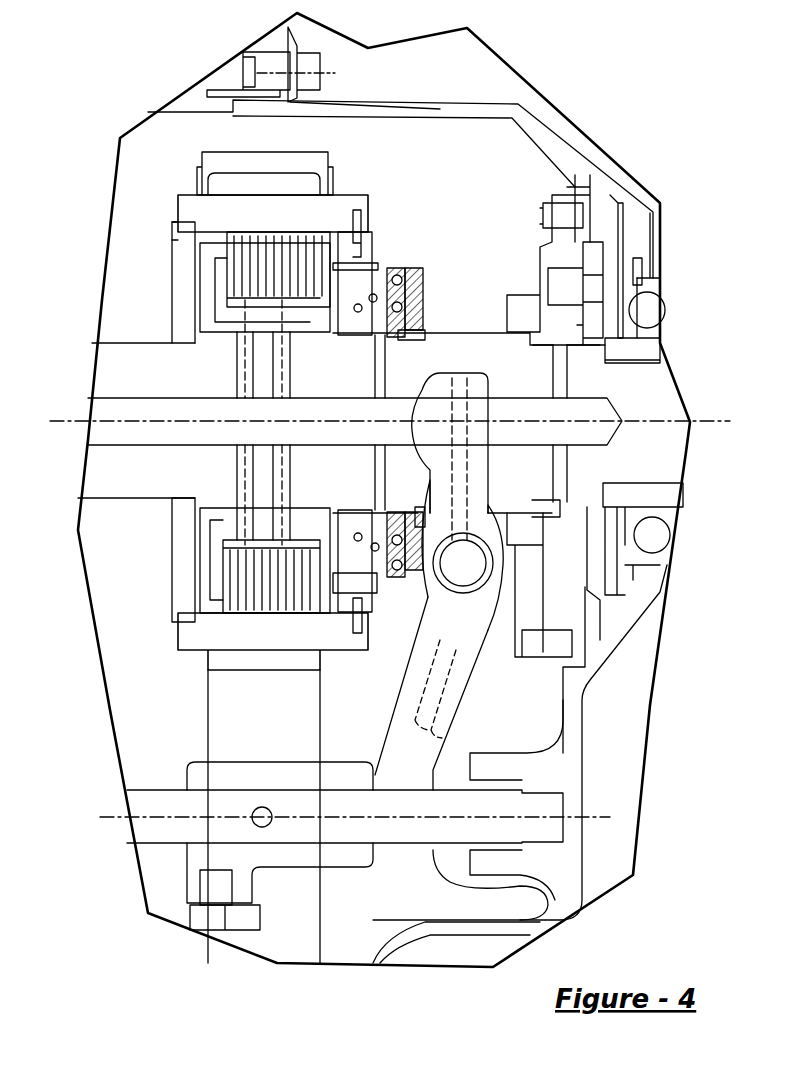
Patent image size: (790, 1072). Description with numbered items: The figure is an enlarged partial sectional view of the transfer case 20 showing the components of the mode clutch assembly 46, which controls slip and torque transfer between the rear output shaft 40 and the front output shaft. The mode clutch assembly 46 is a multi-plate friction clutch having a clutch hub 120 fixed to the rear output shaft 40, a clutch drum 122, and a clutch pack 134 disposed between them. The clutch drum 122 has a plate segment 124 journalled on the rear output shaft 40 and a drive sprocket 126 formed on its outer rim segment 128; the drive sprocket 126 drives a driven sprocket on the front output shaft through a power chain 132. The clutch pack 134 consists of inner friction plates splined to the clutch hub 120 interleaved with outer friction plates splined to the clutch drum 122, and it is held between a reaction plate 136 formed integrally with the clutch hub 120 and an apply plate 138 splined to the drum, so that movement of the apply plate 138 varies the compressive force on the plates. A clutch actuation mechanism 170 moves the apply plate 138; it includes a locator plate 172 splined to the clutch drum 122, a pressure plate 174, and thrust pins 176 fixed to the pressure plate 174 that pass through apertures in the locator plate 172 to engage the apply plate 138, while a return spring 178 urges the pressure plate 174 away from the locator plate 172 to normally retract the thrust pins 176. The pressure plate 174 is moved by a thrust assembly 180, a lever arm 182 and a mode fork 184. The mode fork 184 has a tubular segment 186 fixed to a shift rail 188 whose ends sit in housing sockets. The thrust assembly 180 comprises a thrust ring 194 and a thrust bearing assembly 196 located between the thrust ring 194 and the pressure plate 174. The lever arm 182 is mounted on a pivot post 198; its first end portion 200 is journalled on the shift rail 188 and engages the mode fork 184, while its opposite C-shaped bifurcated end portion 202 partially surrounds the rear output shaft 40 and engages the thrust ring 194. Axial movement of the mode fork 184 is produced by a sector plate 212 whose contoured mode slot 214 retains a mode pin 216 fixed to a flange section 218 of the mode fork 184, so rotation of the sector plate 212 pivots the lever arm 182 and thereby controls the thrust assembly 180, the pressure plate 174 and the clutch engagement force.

The transfer case 20 is at (560, 88).
The rear output shaft 40 is at (645, 393).
The mode clutch assembly 46 is at (412, 165).
The clutch hub 120 is at (225, 320).
The clutch drum 122 is at (337, 207).
The plate segment 124 is at (182, 263).
The drive sprocket 126 is at (235, 185).
The outer rim segment 128 is at (198, 640).
The power chain 132 is at (233, 743).
The clutch pack 134 is at (225, 572).
The reaction plate 136 is at (212, 275).
The apply plate 138 is at (323, 593).
The clutch actuation mechanism 170 is at (442, 256).
The locator plate 172 is at (345, 313).
The pressure plate 174 is at (383, 252).
The thrust pins 176 is at (365, 580).
The return spring 178 is at (373, 548).
The thrust assembly 180 is at (430, 300).
The lever arm 182 is at (455, 690).
The mode fork 184 is at (290, 870).
The tubular segment 186 is at (278, 778).
The shift rail 188 is at (148, 807).
The thrust ring 194 is at (402, 335).
The thrust bearing assembly 196 is at (423, 597).
The pivot post 198 is at (473, 562).
The first end portion 200 is at (557, 908).
The end portion 202 is at (473, 390).
The sector plate 212 is at (172, 912).
The mode slot 214 is at (202, 917).
The mode pin 216 is at (227, 917).
The flange section 218 is at (192, 860).